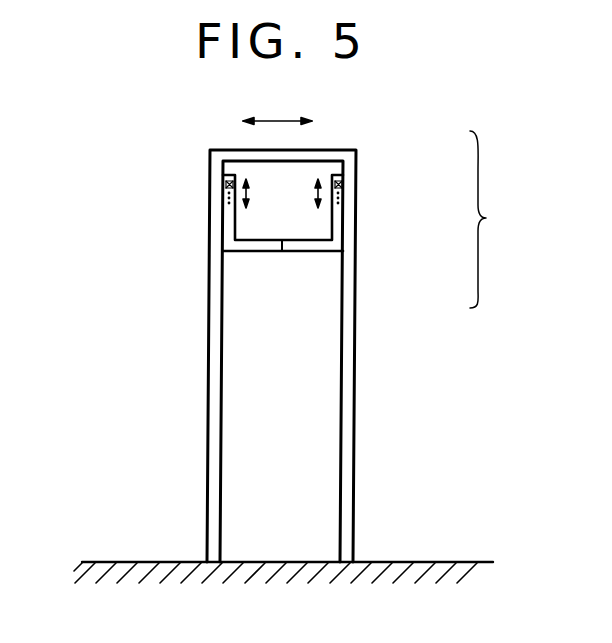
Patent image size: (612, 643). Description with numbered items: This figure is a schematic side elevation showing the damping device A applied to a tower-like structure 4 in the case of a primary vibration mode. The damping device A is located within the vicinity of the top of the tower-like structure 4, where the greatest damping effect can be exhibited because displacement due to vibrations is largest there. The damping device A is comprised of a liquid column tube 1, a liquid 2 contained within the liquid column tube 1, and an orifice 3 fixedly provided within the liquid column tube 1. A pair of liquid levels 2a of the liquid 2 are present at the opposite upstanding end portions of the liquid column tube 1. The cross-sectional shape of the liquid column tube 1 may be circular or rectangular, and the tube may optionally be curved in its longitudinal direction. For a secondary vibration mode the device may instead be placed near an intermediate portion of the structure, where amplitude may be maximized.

The liquid column tube 1 is at (345, 167).
The liquid 2 is at (336, 222).
The liquid levels 2a is at (341, 184).
The orifice 3 is at (283, 252).
The tower-like structure 4 is at (213, 312).
The damping device A is at (503, 219).